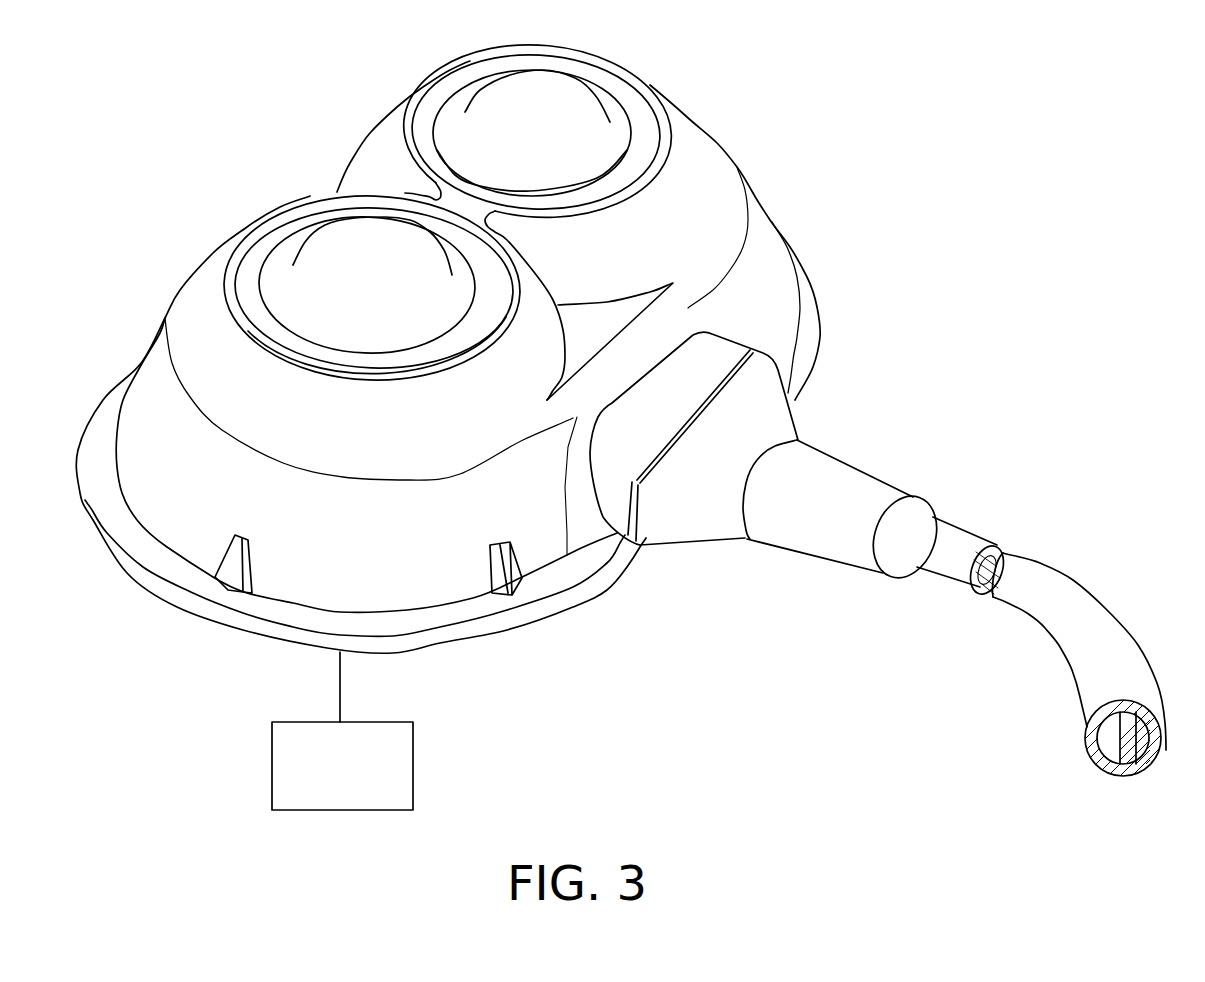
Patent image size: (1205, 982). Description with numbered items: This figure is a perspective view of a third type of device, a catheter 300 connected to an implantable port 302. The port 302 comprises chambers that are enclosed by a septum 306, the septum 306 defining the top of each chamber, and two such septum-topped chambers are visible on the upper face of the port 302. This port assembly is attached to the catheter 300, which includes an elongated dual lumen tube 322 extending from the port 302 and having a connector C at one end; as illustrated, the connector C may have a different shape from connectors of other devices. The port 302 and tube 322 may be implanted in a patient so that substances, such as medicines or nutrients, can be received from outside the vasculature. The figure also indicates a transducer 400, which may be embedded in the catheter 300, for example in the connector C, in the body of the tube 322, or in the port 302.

The catheter 300 is at (1037, 140).
The implantable port 302 is at (715, 122).
The septum 306 is at (493, 90).
The connector C is at (780, 430).
The elongated dual lumen tube 322 is at (1067, 562).
The transducer 400 is at (370, 778).